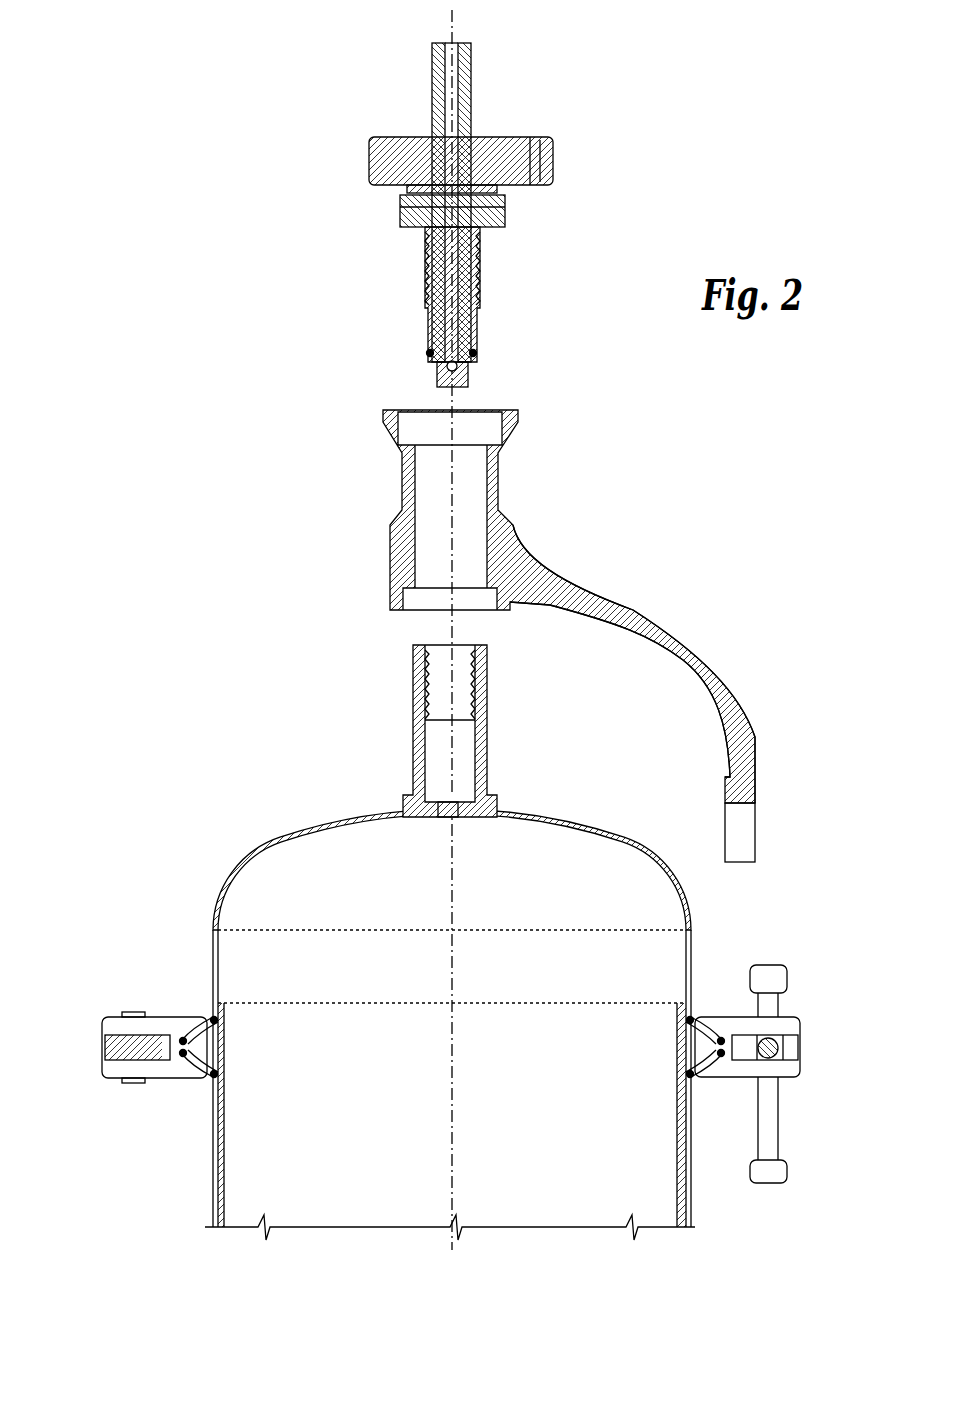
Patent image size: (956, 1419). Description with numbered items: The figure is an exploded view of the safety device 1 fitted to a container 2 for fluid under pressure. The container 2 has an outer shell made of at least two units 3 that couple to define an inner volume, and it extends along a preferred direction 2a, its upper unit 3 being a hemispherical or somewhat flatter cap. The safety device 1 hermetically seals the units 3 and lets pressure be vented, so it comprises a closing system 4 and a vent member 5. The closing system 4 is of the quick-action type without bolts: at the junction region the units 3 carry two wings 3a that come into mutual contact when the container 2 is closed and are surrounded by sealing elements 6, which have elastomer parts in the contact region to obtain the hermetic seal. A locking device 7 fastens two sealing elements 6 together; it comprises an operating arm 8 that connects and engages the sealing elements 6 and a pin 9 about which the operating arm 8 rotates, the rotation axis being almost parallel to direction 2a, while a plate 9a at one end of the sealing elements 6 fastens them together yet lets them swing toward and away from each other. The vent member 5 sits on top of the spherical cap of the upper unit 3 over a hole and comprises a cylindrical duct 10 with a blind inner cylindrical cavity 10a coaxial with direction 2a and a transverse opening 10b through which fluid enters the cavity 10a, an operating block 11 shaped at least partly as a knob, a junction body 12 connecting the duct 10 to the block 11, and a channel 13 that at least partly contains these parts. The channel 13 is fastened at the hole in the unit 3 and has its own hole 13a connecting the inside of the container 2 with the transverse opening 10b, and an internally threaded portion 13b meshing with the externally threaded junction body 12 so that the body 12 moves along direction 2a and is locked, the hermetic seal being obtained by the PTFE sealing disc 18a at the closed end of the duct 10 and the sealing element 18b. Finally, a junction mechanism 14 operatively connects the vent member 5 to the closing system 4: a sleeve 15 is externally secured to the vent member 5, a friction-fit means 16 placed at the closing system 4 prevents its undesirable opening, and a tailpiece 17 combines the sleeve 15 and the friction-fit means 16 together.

The safety device 1 is at (112, 138).
The container 2 is at (277, 808).
The preferred extension direction 2a is at (458, 43).
The units 3 is at (228, 878).
The wings 3a is at (190, 1047).
The closing system 4 is at (77, 908).
The vent member 5 is at (292, 212).
The sealing elements 6 is at (182, 1082).
The locking device 7 is at (795, 1000).
The operating arm 8 is at (772, 1190).
The pin 9 is at (126, 1019).
The plate 9a is at (108, 1045).
The cylindrical duct 10 is at (424, 197).
The inner cylindrical cavity 10a is at (447, 43).
The transverse opening 10b is at (440, 372).
The operating block 11 is at (375, 150).
The junction body 12 is at (495, 225).
The channel 13 is at (413, 758).
The hole 13a is at (445, 820).
The internally threaded portion 13b is at (425, 280).
The junction mechanism 14 is at (660, 470).
The sleeve 15 is at (402, 545).
The friction-fit means 16 is at (762, 840).
The tailpiece 17 is at (668, 630).
The sealing disc 18a is at (468, 388).
The sealing element 18b is at (476, 353).